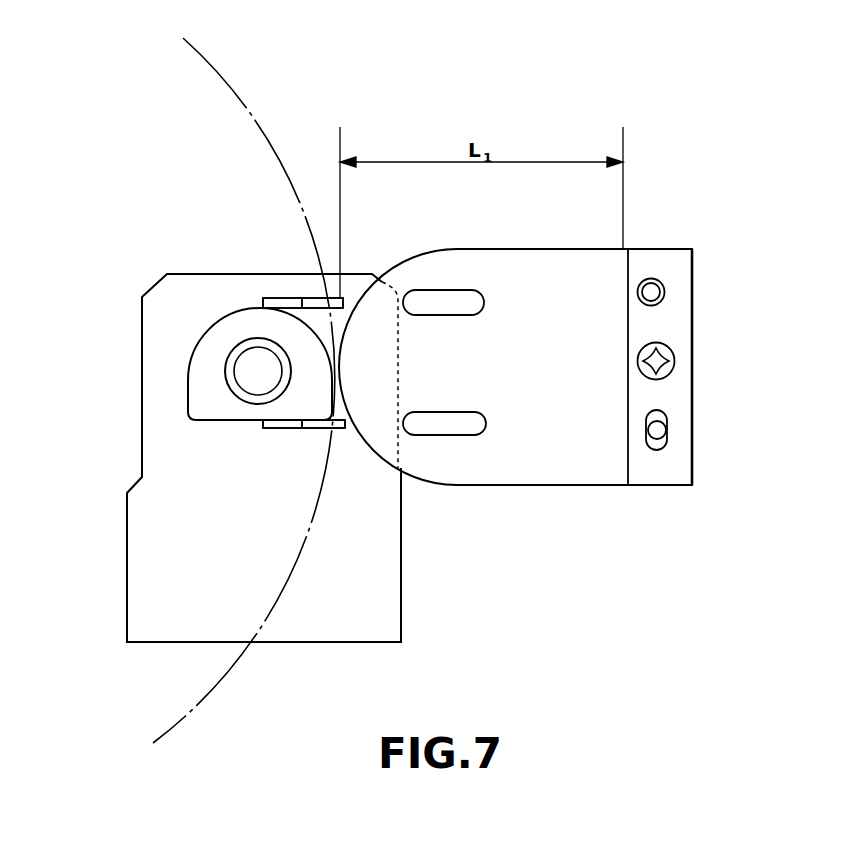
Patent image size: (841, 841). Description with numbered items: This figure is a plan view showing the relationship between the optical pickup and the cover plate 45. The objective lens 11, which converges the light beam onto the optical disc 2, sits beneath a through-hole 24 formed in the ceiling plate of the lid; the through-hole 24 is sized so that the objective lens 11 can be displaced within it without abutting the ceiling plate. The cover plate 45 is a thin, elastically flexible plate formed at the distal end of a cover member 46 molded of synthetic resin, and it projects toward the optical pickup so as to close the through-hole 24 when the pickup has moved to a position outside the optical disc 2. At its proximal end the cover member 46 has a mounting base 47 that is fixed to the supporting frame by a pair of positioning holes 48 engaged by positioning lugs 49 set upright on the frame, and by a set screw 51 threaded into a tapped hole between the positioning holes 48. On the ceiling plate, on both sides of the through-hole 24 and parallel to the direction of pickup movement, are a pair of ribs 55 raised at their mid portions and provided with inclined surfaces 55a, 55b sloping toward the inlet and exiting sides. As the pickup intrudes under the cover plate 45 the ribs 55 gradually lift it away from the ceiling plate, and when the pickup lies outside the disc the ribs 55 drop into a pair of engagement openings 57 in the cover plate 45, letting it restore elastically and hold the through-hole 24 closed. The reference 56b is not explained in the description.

The optical disc 2 is at (250, 110).
The objective lens 11 is at (250, 372).
The through-hole 24 is at (232, 333).
The cover plate 45 is at (540, 467).
The cover member 46 is at (675, 255).
The mounting base 47 is at (677, 472).
The positioning hole 48 is at (658, 285).
The positioning lug 49 is at (652, 293).
The set screw 51 is at (672, 362).
The rib 55 is at (283, 298).
The inclined surface 55a is at (273, 298).
The inclined surface 55b is at (335, 428).
The engaging piece 56b is at (333, 298).
The engagement opening 57 is at (469, 292).